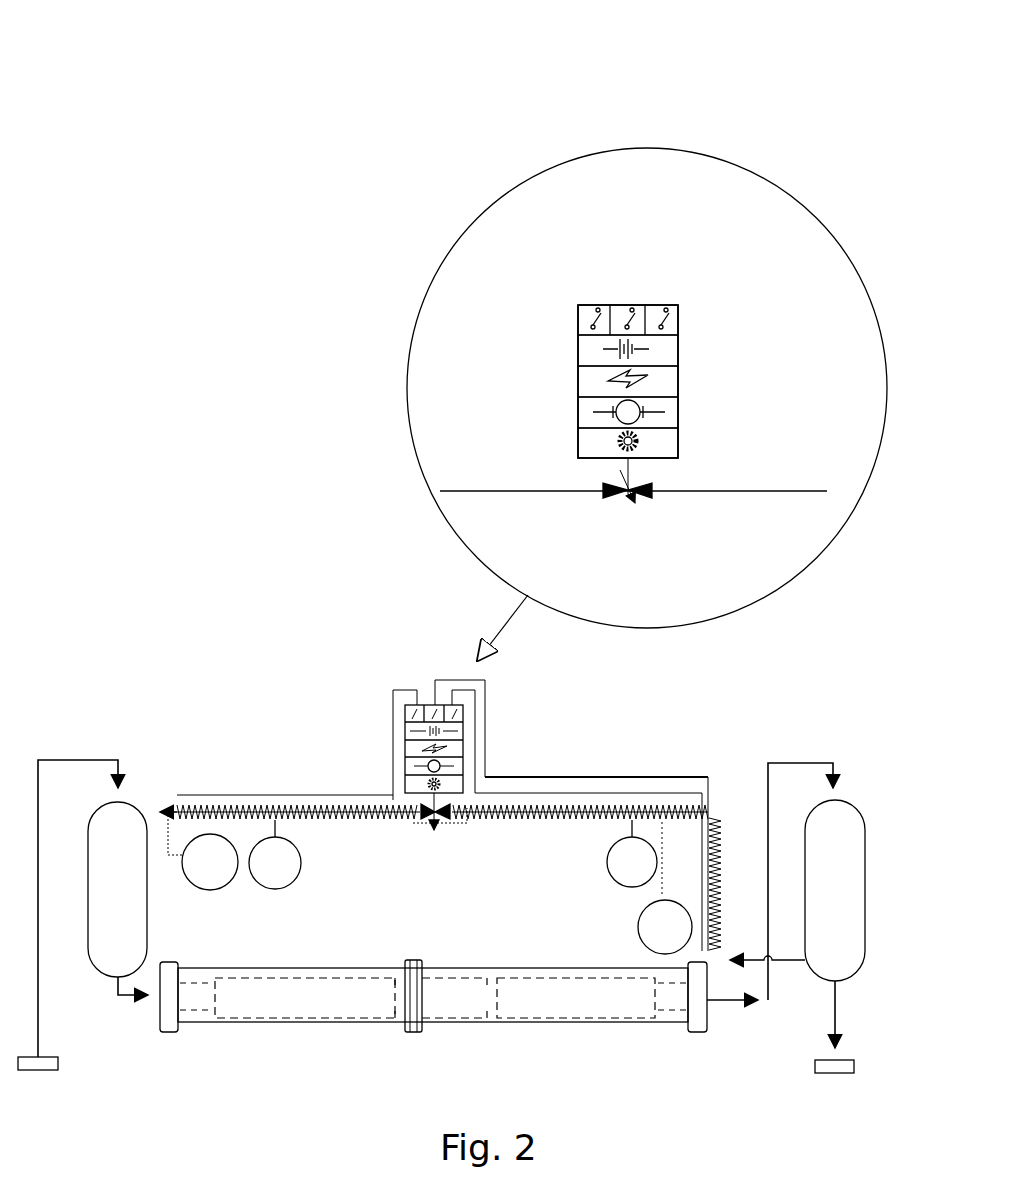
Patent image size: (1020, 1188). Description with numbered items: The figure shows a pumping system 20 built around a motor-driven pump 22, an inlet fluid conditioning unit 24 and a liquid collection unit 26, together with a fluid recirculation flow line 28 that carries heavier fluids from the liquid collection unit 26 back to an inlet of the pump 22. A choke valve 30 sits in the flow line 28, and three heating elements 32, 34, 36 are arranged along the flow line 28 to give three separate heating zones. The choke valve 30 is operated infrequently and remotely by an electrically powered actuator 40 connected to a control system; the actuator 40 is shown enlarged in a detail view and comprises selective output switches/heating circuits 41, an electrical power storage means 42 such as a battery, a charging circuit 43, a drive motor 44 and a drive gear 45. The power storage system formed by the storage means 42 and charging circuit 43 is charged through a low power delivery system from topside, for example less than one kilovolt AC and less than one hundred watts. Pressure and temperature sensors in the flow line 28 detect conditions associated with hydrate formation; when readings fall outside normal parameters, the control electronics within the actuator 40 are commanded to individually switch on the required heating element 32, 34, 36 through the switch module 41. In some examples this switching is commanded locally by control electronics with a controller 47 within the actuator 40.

The pumping system 20 is at (190, 338).
The pump 22 is at (550, 1020).
The inlet fluid conditioning unit 24 is at (107, 977).
The liquid collection unit 26 is at (852, 832).
The flow line 28 is at (150, 806).
The choke valve 30 is at (437, 823).
The heating element 32 is at (330, 808).
The heating element 34 is at (632, 808).
The heating element 36 is at (712, 810).
The actuator 40 is at (415, 666).
The selective output switches/heating circuits 41 is at (682, 323).
The electrical power storage means 42 is at (682, 352).
The charging circuit 43 is at (682, 386).
The drive motor 44 is at (585, 412).
The drive gear 45 is at (575, 443).
The controller 47 is at (572, 291).